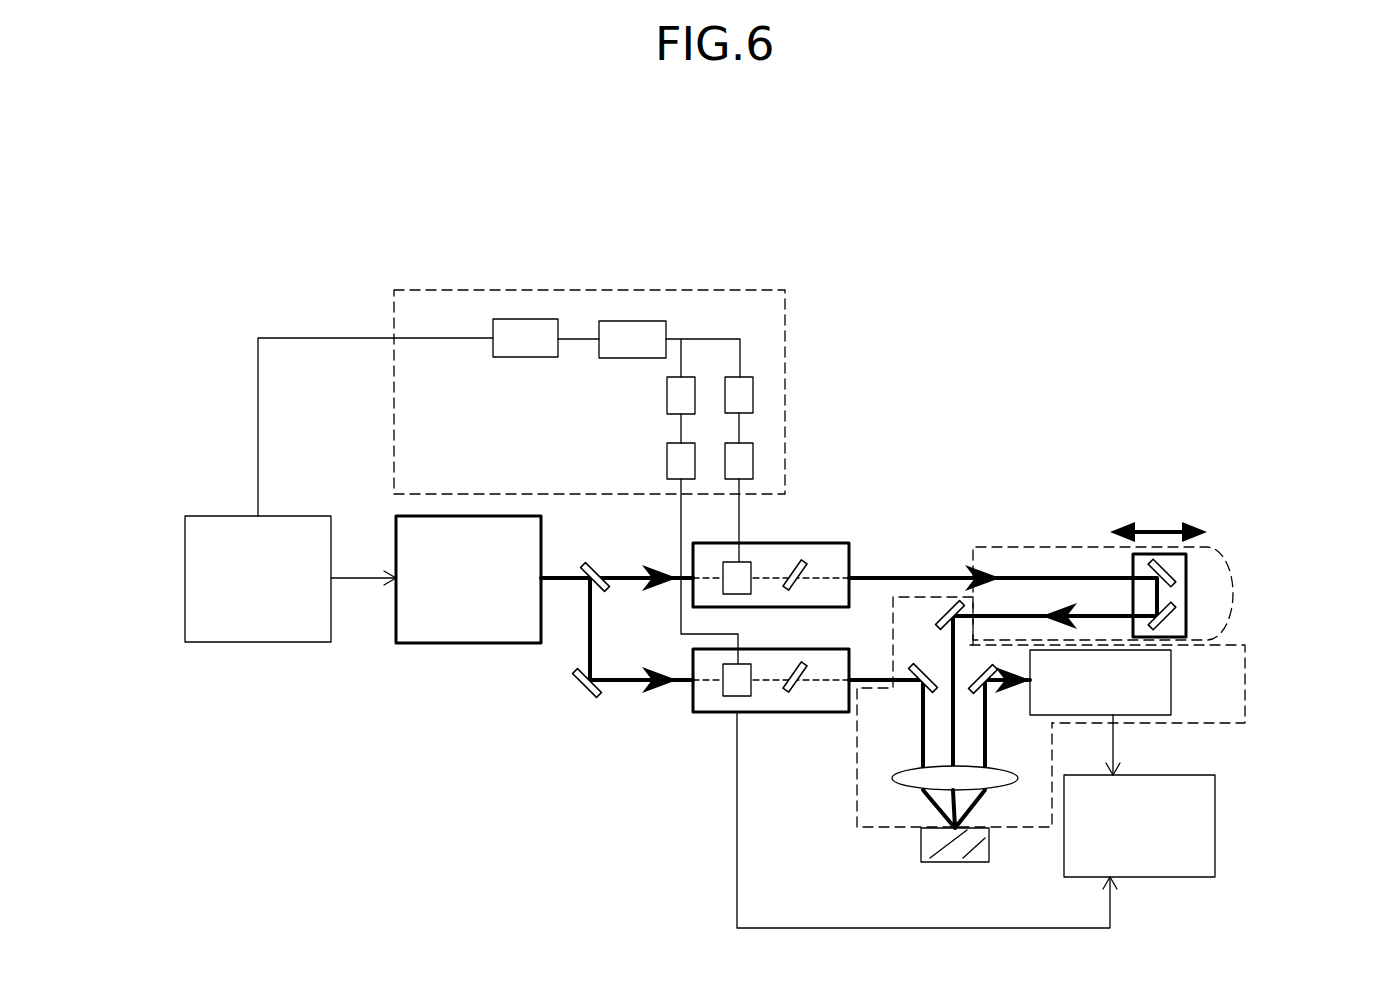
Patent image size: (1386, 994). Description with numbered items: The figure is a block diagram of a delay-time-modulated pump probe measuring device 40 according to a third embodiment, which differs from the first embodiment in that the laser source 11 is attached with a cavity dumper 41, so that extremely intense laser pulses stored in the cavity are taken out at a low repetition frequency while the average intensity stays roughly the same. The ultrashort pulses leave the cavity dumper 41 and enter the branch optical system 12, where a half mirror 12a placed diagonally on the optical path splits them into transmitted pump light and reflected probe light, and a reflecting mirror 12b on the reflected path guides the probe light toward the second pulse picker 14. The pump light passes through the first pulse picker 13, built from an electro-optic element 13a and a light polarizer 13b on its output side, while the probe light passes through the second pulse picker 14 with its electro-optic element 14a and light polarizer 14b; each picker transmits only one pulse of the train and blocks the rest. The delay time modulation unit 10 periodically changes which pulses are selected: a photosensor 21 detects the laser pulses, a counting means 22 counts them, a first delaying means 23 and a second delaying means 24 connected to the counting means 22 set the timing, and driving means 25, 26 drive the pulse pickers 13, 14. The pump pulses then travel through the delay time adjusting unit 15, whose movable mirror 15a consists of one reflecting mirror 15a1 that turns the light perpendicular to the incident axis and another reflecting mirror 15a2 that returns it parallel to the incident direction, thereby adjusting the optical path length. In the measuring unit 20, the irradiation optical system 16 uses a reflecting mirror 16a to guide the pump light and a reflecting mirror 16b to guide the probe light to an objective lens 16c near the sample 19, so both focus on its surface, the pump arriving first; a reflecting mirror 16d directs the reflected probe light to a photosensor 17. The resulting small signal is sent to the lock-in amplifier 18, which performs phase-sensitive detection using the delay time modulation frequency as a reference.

The delay time modulation unit 10 is at (787, 338).
The laser source 11 is at (260, 642).
The branch optical system 12 is at (602, 649).
The half mirror 12a is at (592, 565).
The reflecting mirror 12b is at (585, 692).
The first pulse picker 13 is at (759, 572).
The electro-optic element 13a is at (751, 563).
The light polarizer 13b is at (793, 588).
The second pulse picker 14 is at (743, 711).
The electro-optic element 14a is at (737, 698).
The light polarizer 14b is at (795, 697).
The delay time adjusting unit 15 is at (1161, 554).
The movable mirror 15a is at (1241, 564).
The reflecting mirror 15a1 is at (1173, 577).
The reflecting mirror 15a2 is at (1188, 625).
The irradiation optical system 16 is at (927, 661).
The reflecting mirror 16a is at (955, 600).
The reflecting mirror 16b is at (918, 685).
The objective lens 16c is at (895, 783).
The reflecting mirror 16d is at (988, 687).
The photosensor 17 is at (1173, 683).
The lock-in amplifier 18 is at (1215, 820).
The sample 19 is at (963, 862).
The measuring unit 20 is at (1153, 671).
The photosensor 21 is at (527, 319).
The counting means 22 is at (627, 321).
The first delaying means 23 is at (753, 397).
The second delaying means 24 is at (667, 395).
The driving means 25 is at (753, 463).
The driving means 26 is at (667, 460).
The delay-time-modulated pump probe measuring device 40 is at (974, 410).
The cavity dumper 41 is at (448, 643).